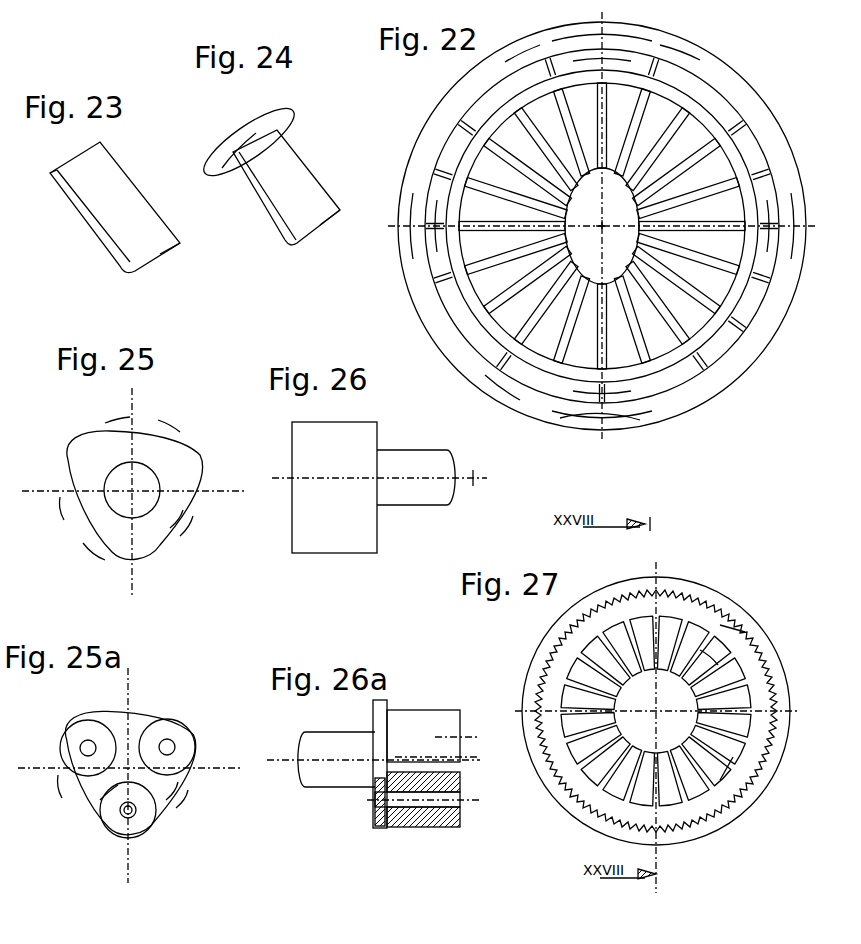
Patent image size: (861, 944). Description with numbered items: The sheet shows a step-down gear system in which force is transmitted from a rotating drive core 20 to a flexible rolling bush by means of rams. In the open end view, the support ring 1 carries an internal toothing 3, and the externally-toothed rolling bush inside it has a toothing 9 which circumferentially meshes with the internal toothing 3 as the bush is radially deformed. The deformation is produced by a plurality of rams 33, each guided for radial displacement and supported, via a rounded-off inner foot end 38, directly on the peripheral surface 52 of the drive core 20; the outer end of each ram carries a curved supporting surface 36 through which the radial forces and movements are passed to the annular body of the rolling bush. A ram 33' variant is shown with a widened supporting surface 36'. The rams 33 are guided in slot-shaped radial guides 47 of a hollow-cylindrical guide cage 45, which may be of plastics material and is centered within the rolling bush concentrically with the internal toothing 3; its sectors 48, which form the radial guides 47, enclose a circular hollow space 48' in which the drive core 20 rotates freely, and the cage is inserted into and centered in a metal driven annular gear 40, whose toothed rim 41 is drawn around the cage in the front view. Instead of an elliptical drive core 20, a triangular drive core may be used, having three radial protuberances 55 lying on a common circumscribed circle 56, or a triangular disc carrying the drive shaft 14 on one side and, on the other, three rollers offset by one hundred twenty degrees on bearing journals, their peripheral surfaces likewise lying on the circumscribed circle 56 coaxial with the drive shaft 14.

In FIG. 22, the support ring 1 is at (708, 63).
In FIG. 22, the internal toothing 3 is at (428, 190).
In FIG. 22, the toothing 9 is at (422, 263).
In FIG. 22, the peripheral surface 52 is at (602, 226).
In FIG. 22, the drive core 20 is at (733, 282).
In FIG. 22, the ram 33 is at (598, 239).
In FIG. 23, the ram 33 is at (115, 219).
In FIG. 22, the guide cage 45 is at (622, 358).
In FIG. 27, the guide cage 45 is at (743, 630).
In FIG. 23, the supporting surface 36 is at (49, 198).
In FIG. 23, the inner foot end 38 is at (162, 255).
In FIG. 24, the inner foot end 38 is at (323, 233).
In FIG. 24, the widened supporting surface 36' is at (249, 142).
In FIG. 24, the ram with widened supporting surface 33' is at (299, 183).
In FIG. 25, the radial protuberance 55 is at (73, 458).
In FIG. 25, the drive shaft 14 is at (152, 478).
In FIG. 26, the drive shaft 14 is at (426, 502).
In FIG. 25A, the drive shaft 14 is at (122, 776).
In FIG. 26A, the drive shaft 14 is at (326, 790).
In FIG. 25, the circumscribed circle 56 is at (60, 513).
In FIG. 25A, the circumscribed circle 56 is at (58, 790).
In FIG. 27, the driven annular gear 40 is at (548, 640).
In FIG. 27, the toothed ring 41 is at (545, 672).
In FIG. 27, the sector 48 is at (623, 735).
In FIG. 27, the slot-shaped radial guide 47 is at (710, 690).
In FIG. 27, the circular hollow space 48' is at (771, 779).